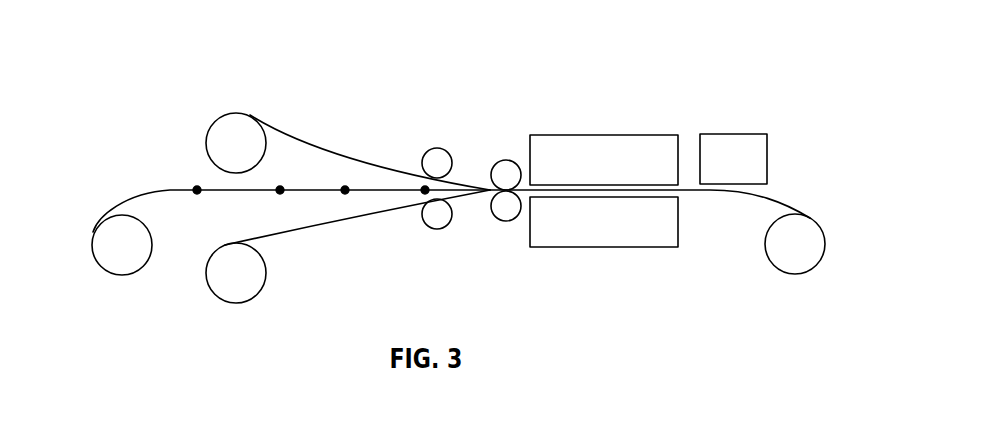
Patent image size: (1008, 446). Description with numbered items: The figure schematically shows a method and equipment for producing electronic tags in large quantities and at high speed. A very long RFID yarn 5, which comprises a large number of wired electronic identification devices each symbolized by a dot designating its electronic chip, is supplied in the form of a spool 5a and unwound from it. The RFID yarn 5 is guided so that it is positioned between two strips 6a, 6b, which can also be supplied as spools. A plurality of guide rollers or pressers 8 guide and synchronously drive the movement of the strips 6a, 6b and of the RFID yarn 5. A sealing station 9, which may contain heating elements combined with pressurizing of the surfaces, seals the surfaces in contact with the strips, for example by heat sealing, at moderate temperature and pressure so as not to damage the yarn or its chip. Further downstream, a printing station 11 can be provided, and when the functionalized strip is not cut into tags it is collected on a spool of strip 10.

The RFID yarn 5 is at (170, 188).
The spool 5a is at (123, 263).
The strip 6a is at (347, 152).
The strip 6b is at (342, 220).
The guide rollers or pressers 8 is at (438, 148).
The sealing station 9 is at (572, 133).
The spool of strip 10 is at (797, 258).
The printing station 11 is at (733, 133).